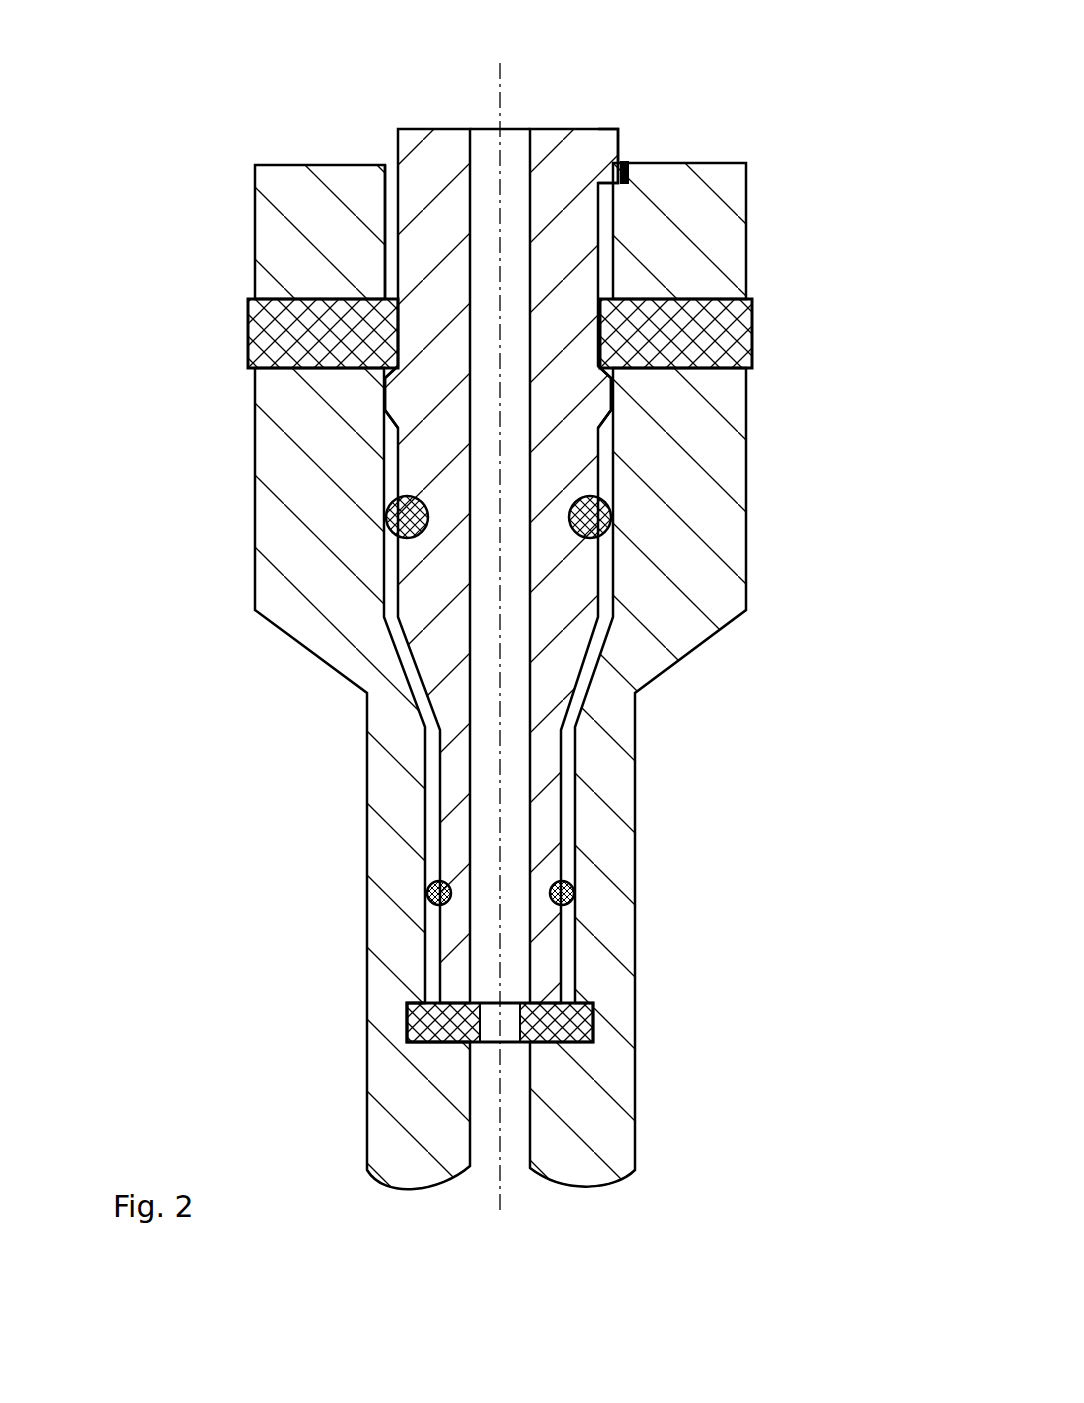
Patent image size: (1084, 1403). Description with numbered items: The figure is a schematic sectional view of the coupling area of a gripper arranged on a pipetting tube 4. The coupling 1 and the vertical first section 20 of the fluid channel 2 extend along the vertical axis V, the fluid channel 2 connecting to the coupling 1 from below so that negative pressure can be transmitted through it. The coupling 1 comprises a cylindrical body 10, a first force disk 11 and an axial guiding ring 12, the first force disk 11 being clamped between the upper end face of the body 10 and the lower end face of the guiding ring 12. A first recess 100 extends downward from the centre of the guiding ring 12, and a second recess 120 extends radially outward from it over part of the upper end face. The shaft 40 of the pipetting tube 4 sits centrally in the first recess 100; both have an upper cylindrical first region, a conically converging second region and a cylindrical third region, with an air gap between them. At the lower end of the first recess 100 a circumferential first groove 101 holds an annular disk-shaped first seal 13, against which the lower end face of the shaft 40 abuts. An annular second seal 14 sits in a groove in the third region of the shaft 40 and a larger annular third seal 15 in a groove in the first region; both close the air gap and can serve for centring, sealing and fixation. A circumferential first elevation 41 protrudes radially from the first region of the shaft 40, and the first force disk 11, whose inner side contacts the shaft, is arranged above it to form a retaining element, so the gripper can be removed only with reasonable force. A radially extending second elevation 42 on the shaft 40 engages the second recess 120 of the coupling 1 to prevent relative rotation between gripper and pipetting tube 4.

The coupling 1 is at (803, 155).
The fluid channel 2 is at (812, 1027).
The pipetting tube 4 is at (402, 93).
The cylindrical body 10 is at (283, 533).
The first force disk 11 is at (282, 322).
The axial guiding ring 12 is at (280, 238).
The first seal 13 is at (595, 1020).
The second seal 14 is at (575, 886).
The third seal 15 is at (617, 478).
The vertical first section 20 is at (383, 1142).
The shaft 40 is at (397, 128).
The first elevation 41 is at (400, 402).
The second elevation 42 is at (611, 147).
The first recess 100 is at (377, 192).
The first groove 101 is at (405, 1030).
The second recess 120 is at (629, 172).
The vertical axis V is at (502, 102).